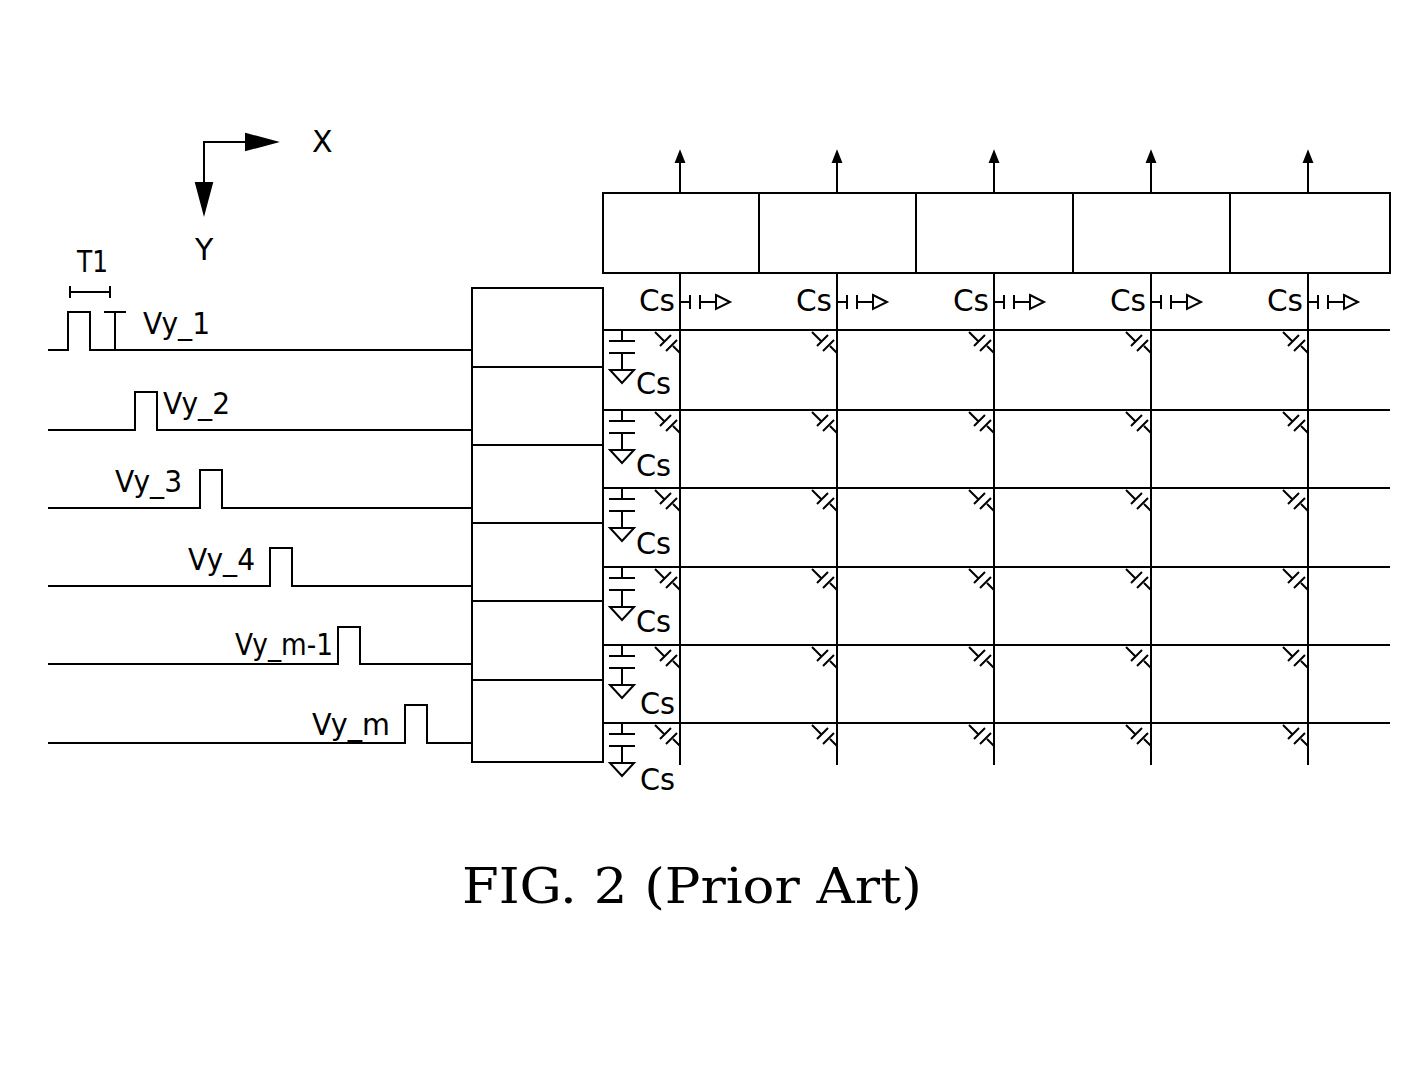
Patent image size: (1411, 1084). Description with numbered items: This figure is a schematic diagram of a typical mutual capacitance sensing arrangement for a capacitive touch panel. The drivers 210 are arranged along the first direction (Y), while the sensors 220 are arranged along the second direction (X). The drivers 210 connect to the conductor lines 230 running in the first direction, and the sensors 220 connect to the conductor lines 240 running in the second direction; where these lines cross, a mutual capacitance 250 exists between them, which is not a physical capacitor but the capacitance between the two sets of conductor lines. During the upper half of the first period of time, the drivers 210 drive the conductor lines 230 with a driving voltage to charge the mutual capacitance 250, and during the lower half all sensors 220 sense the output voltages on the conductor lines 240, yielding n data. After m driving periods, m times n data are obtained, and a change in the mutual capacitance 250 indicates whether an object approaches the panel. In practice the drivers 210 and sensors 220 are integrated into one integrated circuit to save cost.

The drivers 210 is at (486, 524).
The sensors 220 is at (965, 195).
The conductor lines in the first direction 230 is at (645, 330).
The conductor lines in the second direction 240 is at (680, 762).
The mutual capacitance (Cm) 250 is at (672, 352).